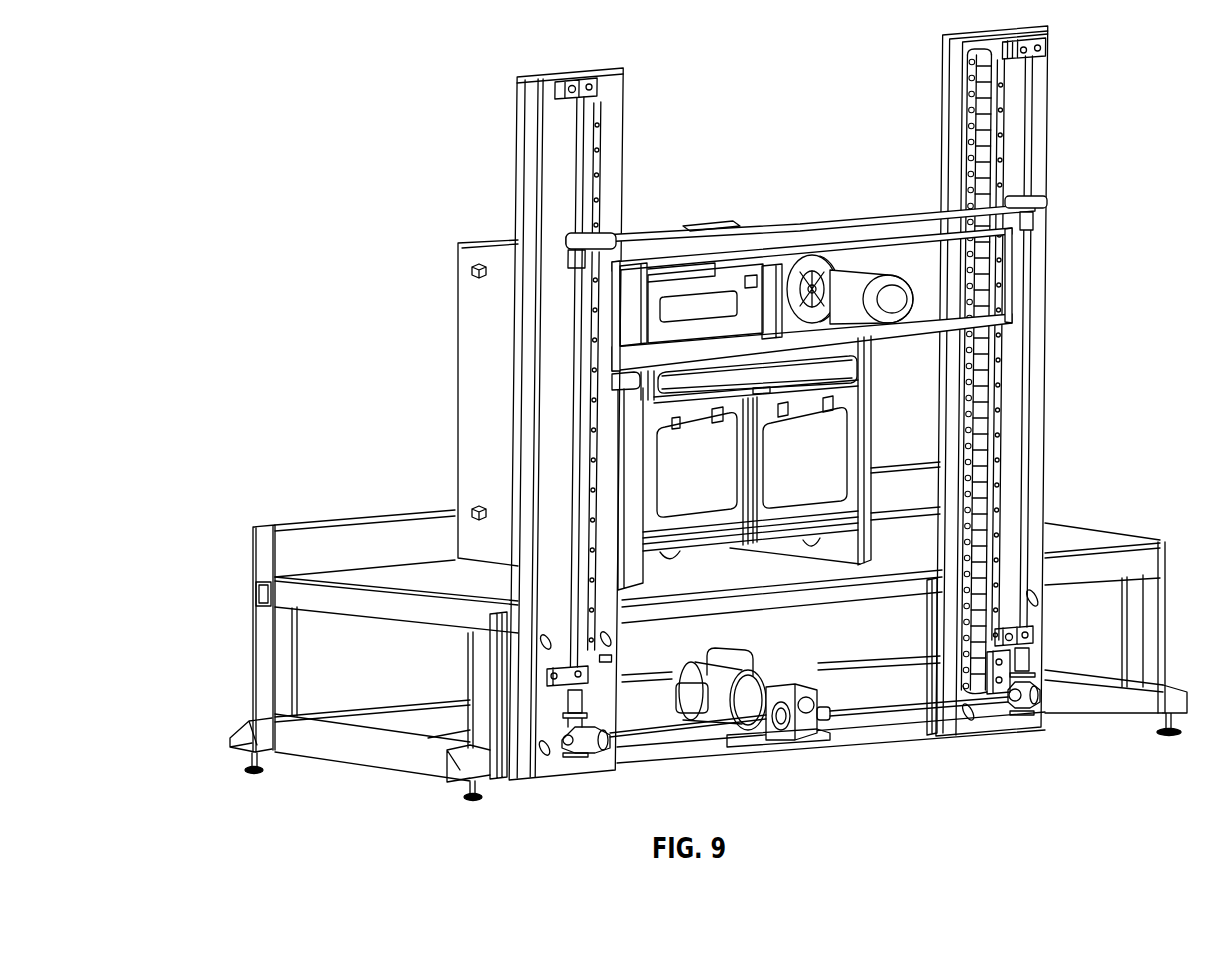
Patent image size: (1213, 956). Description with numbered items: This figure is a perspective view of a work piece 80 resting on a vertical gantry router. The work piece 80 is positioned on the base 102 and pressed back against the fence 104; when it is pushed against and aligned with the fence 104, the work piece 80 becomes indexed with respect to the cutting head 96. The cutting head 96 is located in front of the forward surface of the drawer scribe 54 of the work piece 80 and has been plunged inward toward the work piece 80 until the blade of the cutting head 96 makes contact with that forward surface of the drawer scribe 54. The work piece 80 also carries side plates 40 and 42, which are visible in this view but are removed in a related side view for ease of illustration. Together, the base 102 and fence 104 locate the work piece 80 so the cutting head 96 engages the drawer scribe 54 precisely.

The work piece 80 is at (463, 191).
The drawer scribe 54 is at (693, 276).
The cutting head 96 is at (815, 262).
The side plate 42 is at (871, 404).
The side plate 40 is at (472, 371).
The base 102 is at (373, 576).
The fence 104 is at (273, 527).